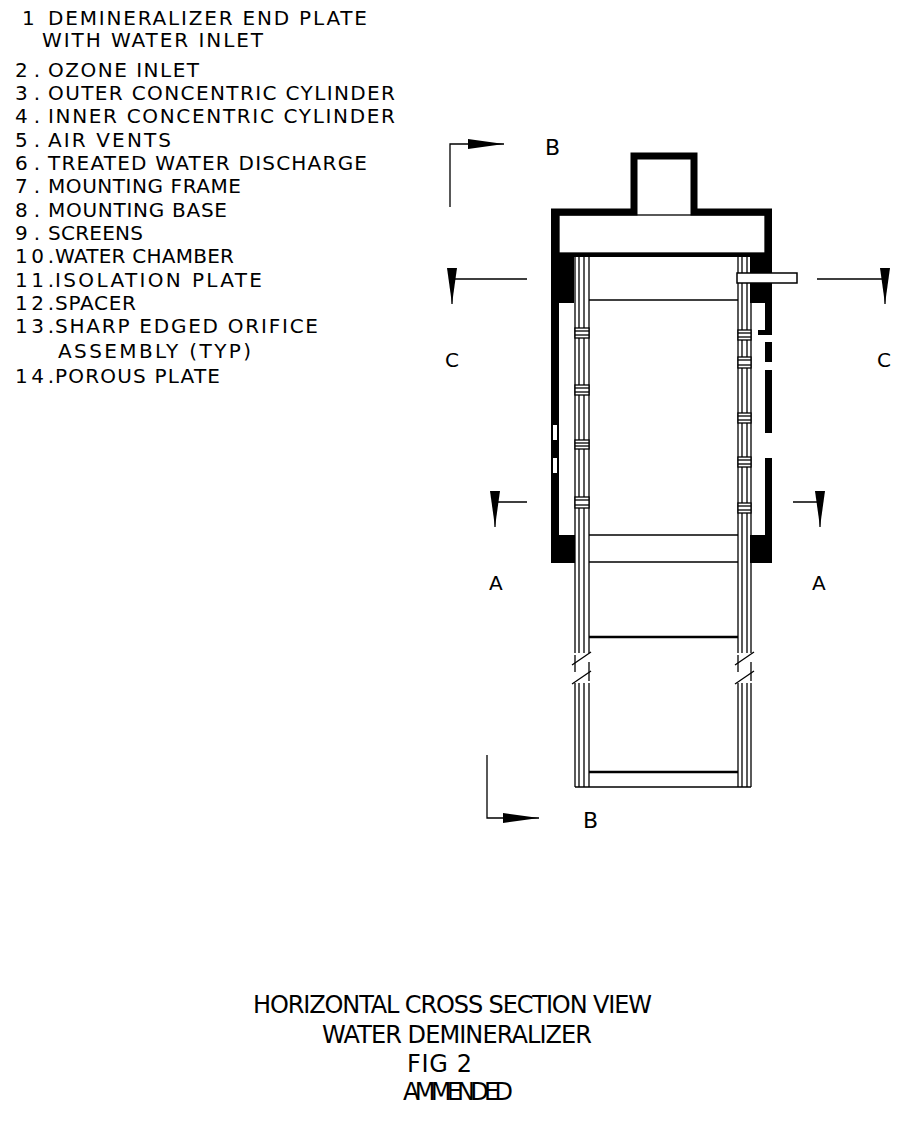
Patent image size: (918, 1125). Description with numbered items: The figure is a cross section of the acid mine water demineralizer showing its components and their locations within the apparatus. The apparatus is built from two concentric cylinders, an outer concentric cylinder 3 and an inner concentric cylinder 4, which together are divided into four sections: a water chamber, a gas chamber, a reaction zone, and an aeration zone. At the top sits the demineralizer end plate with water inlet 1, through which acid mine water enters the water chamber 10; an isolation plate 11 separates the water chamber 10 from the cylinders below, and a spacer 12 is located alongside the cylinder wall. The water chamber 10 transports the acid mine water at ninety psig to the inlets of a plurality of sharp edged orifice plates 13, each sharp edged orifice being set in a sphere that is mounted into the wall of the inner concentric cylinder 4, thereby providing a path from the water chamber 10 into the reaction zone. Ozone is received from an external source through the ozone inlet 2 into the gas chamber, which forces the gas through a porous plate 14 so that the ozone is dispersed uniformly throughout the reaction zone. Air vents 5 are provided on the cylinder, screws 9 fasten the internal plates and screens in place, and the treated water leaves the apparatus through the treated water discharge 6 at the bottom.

The demineralizer end plate with water inlet 1 is at (700, 180).
The ozone inlet 2 is at (787, 267).
The outer concentric cylinder 3 is at (772, 480).
The inner concentric cylinder 4 is at (572, 733).
The air vents 5 is at (753, 672).
The treated water discharge 6 is at (625, 792).
The screws 9 is at (668, 643).
The water chamber 10 is at (710, 238).
The isolation plate 11 is at (620, 252).
The spacer 12 is at (762, 333).
The sharp edged orifice plate 13 is at (752, 455).
The porous plate 14 is at (652, 303).